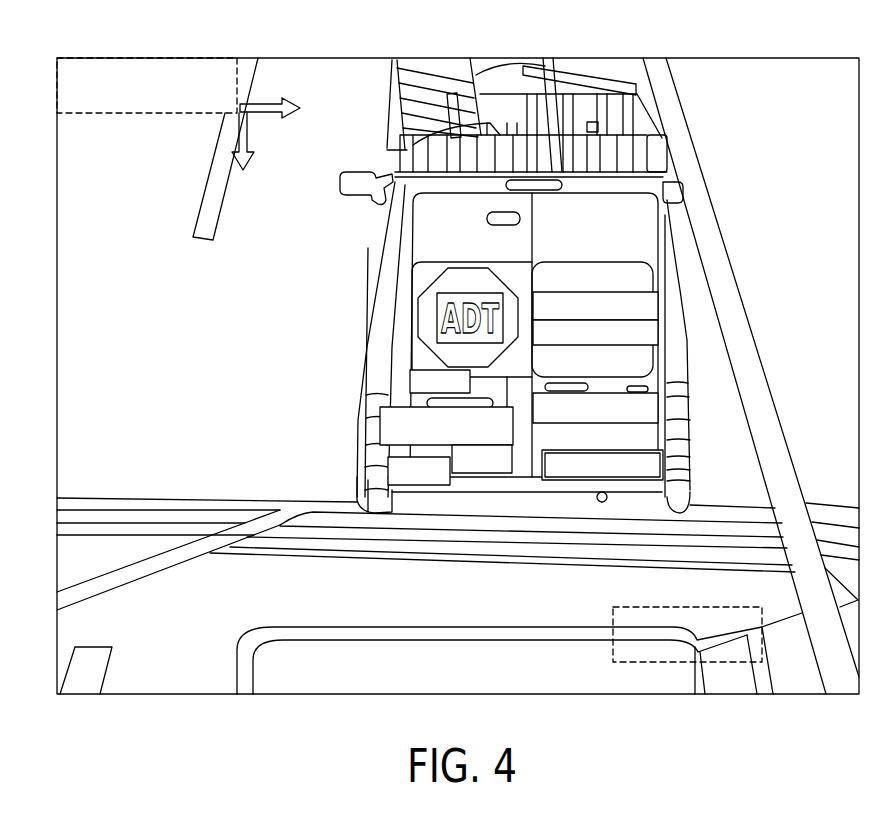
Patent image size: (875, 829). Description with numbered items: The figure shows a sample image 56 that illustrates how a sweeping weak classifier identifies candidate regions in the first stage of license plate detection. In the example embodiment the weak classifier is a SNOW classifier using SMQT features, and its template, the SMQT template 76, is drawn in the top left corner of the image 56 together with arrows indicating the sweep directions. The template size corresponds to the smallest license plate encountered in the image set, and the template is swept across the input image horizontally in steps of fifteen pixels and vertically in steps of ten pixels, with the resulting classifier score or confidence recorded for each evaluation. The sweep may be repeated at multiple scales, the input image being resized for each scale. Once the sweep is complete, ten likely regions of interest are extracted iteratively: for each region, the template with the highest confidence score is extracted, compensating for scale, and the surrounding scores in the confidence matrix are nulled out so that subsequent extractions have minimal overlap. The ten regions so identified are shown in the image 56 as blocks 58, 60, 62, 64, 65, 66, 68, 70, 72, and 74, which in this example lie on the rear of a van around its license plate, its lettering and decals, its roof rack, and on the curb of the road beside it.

The sample image 56 is at (232, 728).
The block 58 is at (693, 653).
The block 60 is at (666, 470).
The block 62 is at (660, 405).
The block 64 is at (660, 330).
The block 65 is at (480, 473).
The block 66 is at (660, 297).
The block 68 is at (667, 152).
The block 70 is at (388, 470).
The block 72 is at (380, 427).
The block 74 is at (410, 373).
The SMQT template 76 is at (221, 58).